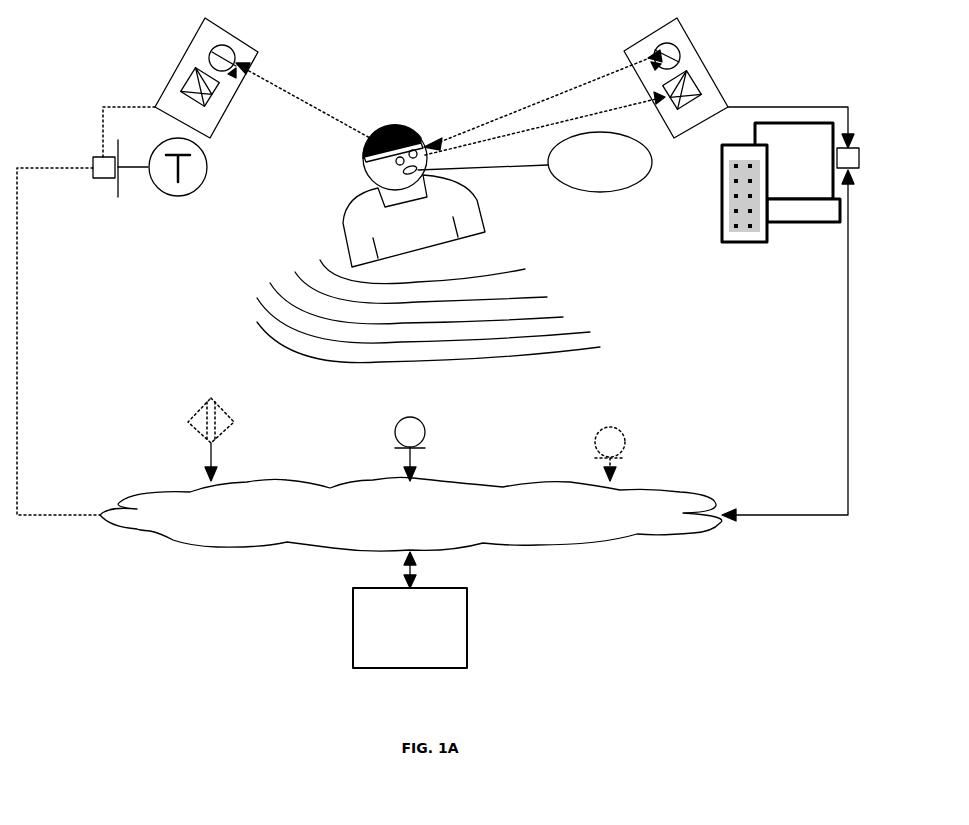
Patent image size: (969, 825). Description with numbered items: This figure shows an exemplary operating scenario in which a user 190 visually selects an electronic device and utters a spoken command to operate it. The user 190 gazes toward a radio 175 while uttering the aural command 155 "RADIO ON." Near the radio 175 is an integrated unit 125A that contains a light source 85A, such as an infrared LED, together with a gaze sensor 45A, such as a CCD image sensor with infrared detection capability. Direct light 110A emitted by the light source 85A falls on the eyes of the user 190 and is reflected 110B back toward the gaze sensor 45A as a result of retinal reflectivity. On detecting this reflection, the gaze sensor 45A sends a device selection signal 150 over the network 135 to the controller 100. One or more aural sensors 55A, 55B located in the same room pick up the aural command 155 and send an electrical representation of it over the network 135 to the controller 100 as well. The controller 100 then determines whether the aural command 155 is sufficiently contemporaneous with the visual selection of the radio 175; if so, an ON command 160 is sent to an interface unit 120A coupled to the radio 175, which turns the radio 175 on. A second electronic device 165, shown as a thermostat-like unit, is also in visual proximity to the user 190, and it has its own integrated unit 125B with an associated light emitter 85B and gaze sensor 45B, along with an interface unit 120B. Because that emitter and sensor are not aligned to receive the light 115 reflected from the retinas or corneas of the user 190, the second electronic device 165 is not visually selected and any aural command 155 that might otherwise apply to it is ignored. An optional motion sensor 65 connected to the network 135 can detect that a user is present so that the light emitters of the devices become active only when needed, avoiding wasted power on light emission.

The light emitter 85B is at (205, 35).
The gaze sensor 45B is at (182, 92).
The integrated unit 125B is at (204, 78).
The interface unit 120B is at (93, 178).
The second electronic device 165 is at (181, 196).
The light 115 is at (300, 87).
The direct light 110A is at (543, 100).
The reflected light 110B is at (545, 121).
The light source 85A is at (680, 42).
The gaze sensor 45A is at (700, 85).
The integrated unit 125A is at (676, 78).
The device selection signal 150 is at (850, 120).
The interface unit 120A is at (860, 170).
The radio 175 is at (733, 244).
The aural command 155 is at (602, 194).
The user 190 is at (414, 196).
The ON command 160 is at (847, 388).
The motion sensor 65 is at (190, 418).
The aural sensor 55A is at (396, 418).
The aural sensor 55B is at (598, 427).
The network 135 is at (411, 514).
The controller 100 is at (410, 610).